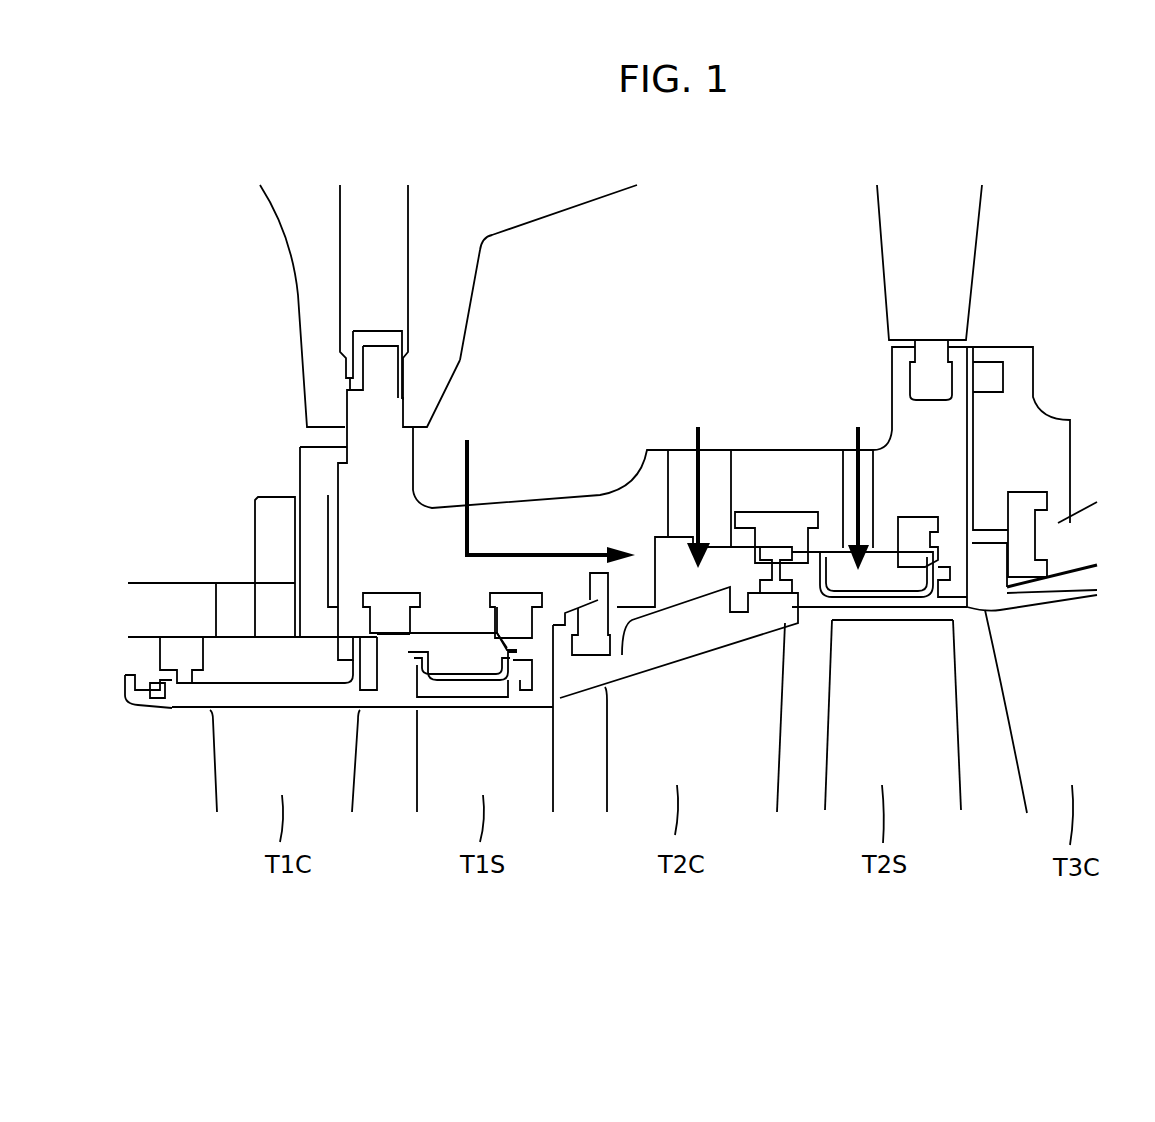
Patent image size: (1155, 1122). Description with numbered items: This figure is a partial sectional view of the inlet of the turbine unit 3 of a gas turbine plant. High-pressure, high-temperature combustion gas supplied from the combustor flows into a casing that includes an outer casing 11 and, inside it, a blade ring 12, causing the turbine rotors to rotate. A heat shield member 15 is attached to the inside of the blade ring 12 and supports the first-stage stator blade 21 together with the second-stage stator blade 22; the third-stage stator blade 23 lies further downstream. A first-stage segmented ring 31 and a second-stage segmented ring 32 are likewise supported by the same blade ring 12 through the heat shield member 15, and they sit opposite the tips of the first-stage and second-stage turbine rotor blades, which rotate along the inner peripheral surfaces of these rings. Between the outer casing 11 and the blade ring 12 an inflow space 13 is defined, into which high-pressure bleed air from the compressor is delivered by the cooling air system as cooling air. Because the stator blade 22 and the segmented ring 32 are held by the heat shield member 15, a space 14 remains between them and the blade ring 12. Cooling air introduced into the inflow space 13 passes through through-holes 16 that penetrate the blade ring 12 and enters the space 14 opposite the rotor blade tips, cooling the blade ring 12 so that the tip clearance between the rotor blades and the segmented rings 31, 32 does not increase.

The turbine unit 3 is at (178, 768).
The outer casing 11 is at (483, 200).
The blade ring 12 is at (565, 507).
The inflow space 13 is at (590, 218).
The space 14 is at (715, 585).
The heat shield member 15 is at (383, 600).
The through-hole 16 is at (481, 512).
The first-stage stator blade 21 is at (265, 695).
The second-stage stator blade 22 is at (682, 645).
The third-stage stator blade 23 is at (1043, 600).
The first-stage segmented ring 31 is at (470, 695).
The second-stage segmented ring 32 is at (882, 607).